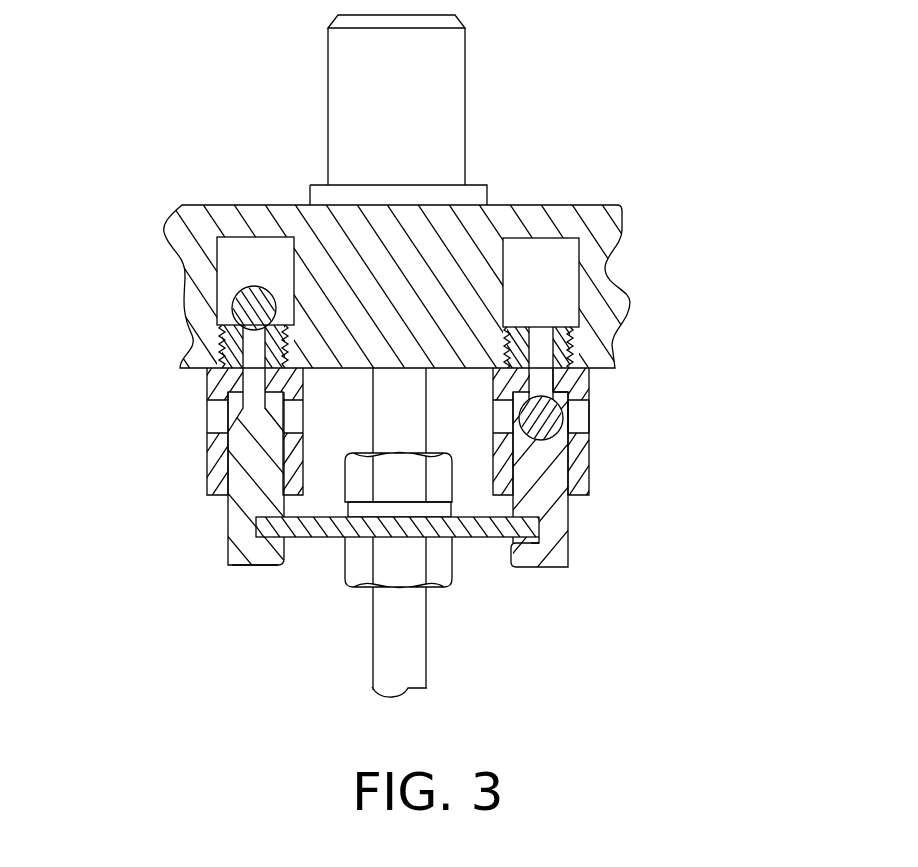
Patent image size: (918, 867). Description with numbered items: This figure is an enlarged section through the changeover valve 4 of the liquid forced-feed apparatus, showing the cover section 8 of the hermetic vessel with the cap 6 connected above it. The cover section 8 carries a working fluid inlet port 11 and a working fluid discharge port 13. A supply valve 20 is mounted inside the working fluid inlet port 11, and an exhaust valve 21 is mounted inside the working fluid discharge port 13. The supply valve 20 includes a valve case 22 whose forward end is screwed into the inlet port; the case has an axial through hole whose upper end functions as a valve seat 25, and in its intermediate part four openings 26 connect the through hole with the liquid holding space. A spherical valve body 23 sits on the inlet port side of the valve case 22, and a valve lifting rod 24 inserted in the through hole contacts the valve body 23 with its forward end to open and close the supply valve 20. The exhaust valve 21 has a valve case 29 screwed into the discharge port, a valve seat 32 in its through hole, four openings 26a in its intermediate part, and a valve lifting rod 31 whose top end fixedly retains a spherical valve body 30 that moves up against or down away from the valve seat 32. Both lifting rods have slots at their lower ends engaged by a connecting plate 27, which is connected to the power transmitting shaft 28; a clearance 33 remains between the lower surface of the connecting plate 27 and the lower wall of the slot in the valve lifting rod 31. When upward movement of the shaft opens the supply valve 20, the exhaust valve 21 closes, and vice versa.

The changeover valve 4 is at (450, 538).
The cap 6 is at (465, 63).
The cover section 8 is at (600, 236).
The working fluid inlet port 11 is at (247, 247).
The working fluid discharge port 13 is at (552, 248).
The supply valve 20 is at (365, 447).
The exhaust valve 21 is at (458, 461).
The valve case 22 is at (207, 487).
The valve body 23 is at (236, 300).
The valve lifting rod 24 is at (240, 567).
The valve seat 25 is at (218, 336).
The openings 26 is at (215, 423).
The openings 26a is at (590, 413).
The connecting plate 27 is at (311, 530).
The power transmitting shaft 28 is at (413, 673).
The valve case 29 is at (590, 492).
The valve body 30 is at (558, 427).
The valve lifting rod 31 is at (558, 567).
The valve seat 32 is at (557, 390).
The clearance 33 is at (533, 540).